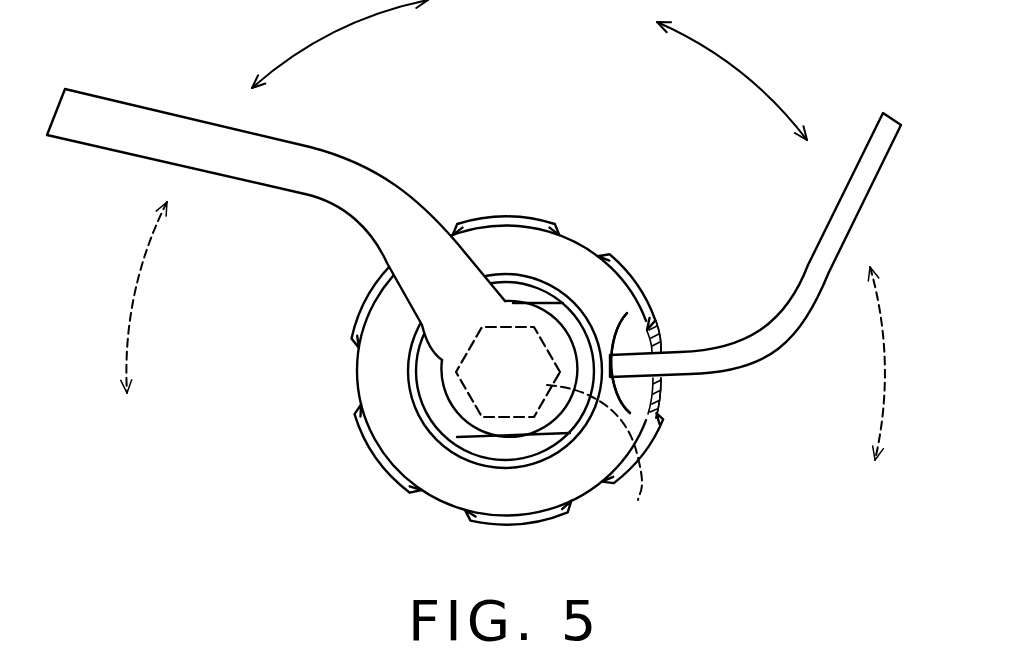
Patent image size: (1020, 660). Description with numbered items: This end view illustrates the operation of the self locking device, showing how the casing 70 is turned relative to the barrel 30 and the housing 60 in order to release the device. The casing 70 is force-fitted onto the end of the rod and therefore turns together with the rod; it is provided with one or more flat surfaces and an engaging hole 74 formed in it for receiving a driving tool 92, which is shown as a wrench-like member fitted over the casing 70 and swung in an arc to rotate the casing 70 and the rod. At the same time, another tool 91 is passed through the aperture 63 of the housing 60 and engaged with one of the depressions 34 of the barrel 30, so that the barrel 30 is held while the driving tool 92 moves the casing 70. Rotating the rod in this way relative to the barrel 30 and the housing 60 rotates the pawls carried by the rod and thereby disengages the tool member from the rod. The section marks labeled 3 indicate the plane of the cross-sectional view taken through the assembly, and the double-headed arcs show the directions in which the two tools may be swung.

The section line 3- 3 is at (511, 52).
The barrel 30 is at (657, 415).
The depression 34 is at (655, 347).
The housing 60 is at (509, 213).
The aperture 63 is at (657, 350).
The casing 70 is at (430, 395).
The engaging hole 74 is at (599, 460).
The tool 91 is at (867, 167).
The driving tool 92 is at (237, 168).